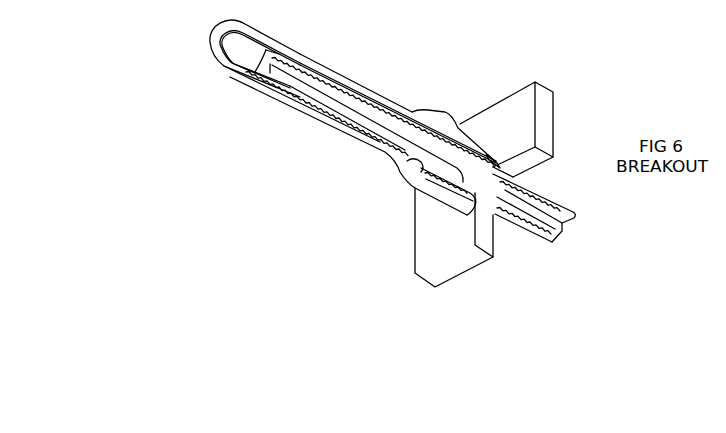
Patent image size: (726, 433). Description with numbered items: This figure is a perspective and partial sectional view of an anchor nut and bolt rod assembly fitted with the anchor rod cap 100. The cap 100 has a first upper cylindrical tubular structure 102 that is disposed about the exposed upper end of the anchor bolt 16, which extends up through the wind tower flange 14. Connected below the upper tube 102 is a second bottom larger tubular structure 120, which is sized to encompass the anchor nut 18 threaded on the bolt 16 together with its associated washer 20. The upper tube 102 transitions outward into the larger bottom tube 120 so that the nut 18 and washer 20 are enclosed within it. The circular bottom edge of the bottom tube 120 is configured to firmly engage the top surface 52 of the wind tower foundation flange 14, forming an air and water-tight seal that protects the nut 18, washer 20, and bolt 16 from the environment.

The anchor rod cap 100 is at (207, 53).
The anchor bolt 16 is at (280, 72).
The first upper cylindrical tubular structure 102 is at (292, 105).
The second bottom larger tubular structure 120 is at (428, 118).
The washer 20 is at (495, 162).
The wind tower flange 14 is at (551, 127).
The anchor nut 18 is at (452, 139).
The top surface 52 is at (431, 242).